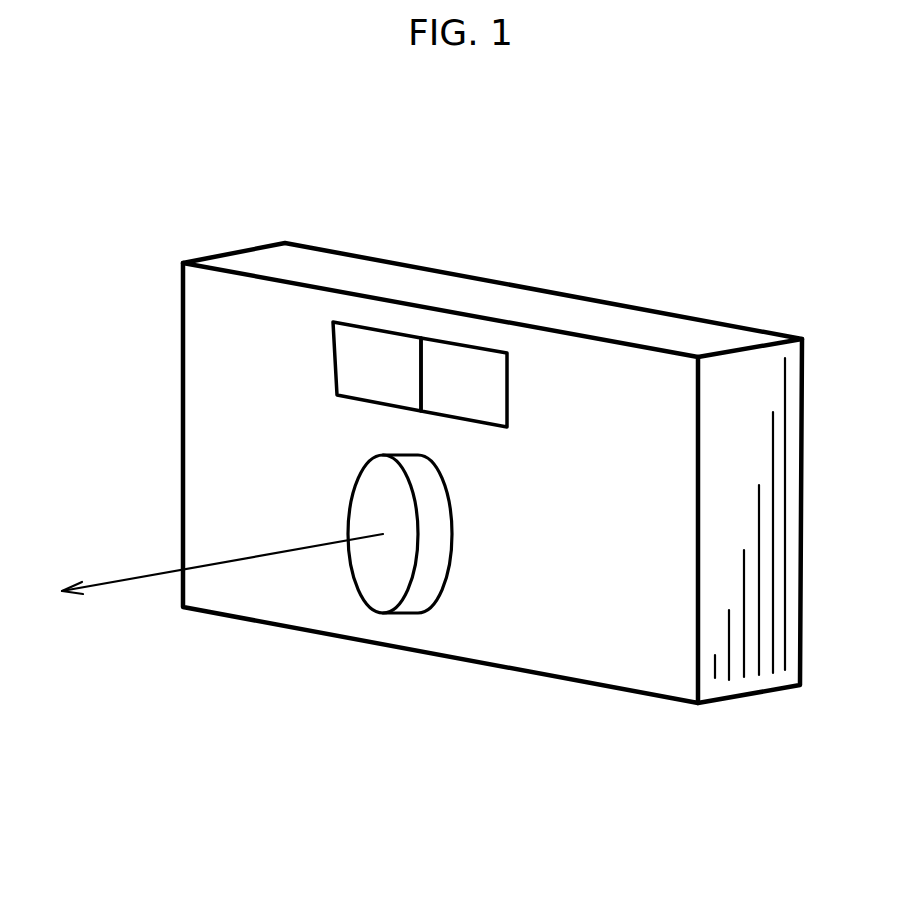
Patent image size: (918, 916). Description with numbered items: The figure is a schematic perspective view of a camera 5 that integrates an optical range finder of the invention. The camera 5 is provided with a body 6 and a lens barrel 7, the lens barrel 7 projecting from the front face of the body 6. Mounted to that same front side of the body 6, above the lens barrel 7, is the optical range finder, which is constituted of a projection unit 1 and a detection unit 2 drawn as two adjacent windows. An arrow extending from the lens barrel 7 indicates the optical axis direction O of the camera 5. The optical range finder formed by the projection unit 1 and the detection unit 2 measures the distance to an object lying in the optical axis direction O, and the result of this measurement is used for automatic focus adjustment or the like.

The projection unit 1 is at (377, 352).
The detection unit 2 is at (460, 365).
The camera 5 is at (492, 477).
The body 6 is at (634, 655).
The lens barrel 7 is at (416, 600).
The optical axis direction O is at (123, 582).